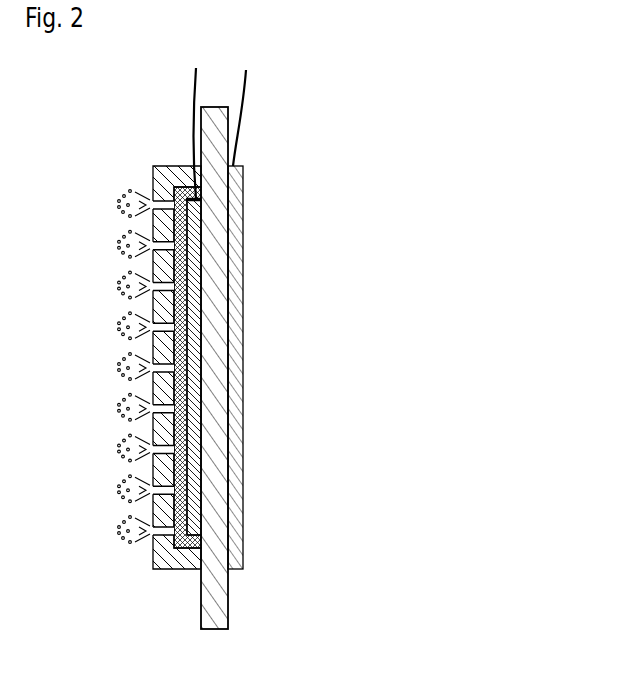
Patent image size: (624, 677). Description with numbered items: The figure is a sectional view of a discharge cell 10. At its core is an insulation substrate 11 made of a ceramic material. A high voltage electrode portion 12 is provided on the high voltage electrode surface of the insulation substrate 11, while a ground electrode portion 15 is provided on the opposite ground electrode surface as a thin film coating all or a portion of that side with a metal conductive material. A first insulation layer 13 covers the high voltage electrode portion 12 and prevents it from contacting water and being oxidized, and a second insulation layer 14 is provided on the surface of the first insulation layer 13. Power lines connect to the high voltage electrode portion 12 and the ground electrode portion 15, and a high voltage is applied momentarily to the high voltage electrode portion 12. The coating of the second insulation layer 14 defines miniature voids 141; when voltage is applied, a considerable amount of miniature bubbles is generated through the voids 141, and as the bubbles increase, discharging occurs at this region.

The discharge cell 10 is at (90, 207).
The insulation substrate 11 is at (217, 397).
The high voltage electrode portion 12 is at (193, 424).
The first insulation layer 13 is at (182, 383).
The second insulation layer 14 is at (153, 180).
The miniature voids 141 is at (153, 304).
The ground electrode portion 15 is at (235, 290).